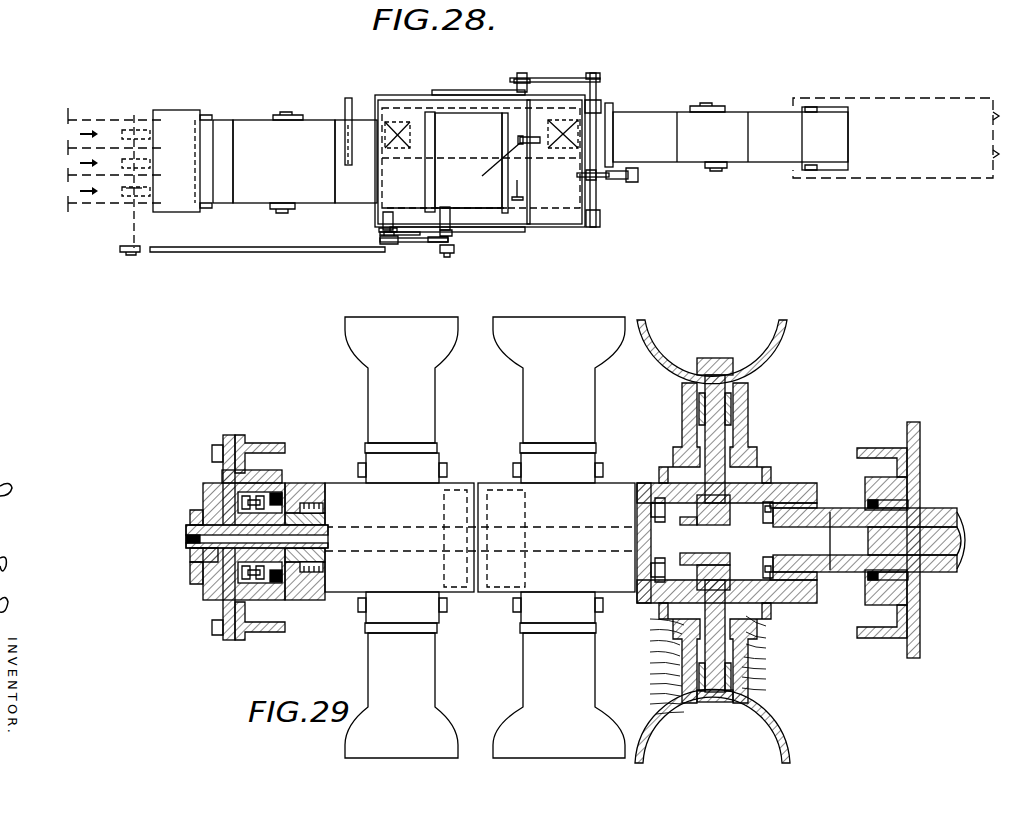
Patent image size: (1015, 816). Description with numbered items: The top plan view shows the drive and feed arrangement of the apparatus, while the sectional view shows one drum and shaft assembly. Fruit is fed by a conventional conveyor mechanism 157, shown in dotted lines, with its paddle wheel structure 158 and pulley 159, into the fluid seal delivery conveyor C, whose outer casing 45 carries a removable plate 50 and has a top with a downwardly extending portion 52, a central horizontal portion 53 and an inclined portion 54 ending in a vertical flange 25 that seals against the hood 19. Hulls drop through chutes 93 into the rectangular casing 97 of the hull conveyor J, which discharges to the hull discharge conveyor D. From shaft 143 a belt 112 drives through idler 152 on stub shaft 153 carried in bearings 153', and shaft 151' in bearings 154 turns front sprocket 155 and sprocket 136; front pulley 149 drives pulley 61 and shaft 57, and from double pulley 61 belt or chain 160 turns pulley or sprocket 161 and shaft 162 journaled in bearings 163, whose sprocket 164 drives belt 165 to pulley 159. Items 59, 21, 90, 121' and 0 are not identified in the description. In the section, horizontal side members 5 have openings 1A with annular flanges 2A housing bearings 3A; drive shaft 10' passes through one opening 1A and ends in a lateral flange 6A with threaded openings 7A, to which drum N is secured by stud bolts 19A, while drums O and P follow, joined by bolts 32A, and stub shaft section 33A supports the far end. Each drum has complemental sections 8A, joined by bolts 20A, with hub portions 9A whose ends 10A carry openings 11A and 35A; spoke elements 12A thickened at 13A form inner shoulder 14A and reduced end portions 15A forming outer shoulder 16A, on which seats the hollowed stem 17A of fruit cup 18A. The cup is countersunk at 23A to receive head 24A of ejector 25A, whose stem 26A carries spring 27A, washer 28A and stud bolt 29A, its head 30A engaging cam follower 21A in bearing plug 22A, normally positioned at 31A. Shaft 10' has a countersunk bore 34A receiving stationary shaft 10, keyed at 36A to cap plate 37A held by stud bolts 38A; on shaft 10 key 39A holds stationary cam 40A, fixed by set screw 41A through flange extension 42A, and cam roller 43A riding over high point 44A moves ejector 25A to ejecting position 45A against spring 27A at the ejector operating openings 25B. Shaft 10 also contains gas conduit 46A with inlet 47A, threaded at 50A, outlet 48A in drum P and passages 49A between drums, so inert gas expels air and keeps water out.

In FIG. 28, the conveyor mechanism 157 is at (128, 128).
In FIG. 28, the paddle wheel structure 158 is at (126, 190).
In FIG. 28, the pulley 159 is at (126, 256).
In FIG. 28, the removable plate 50 is at (180, 125).
In FIG. 28, the downwardly extending top portion 52 is at (222, 130).
In FIG. 28, the central horizontal portion 53 is at (284, 161).
In FIG. 28, the outer casing 45 is at (254, 112).
In FIG. 28, the bolt 59 is at (280, 112).
In FIG. 28, the conveyor structure C is at (258, 196).
In FIG. 28, the belt 165 is at (308, 255).
In FIG. 28, the rectangular casing 97 is at (366, 120).
In FIG. 28, the hull conveyor J is at (350, 96).
In FIG. 28, the hood 19 is at (482, 142).
In FIG. 28, the chutes 93 is at (400, 130).
In FIG. 28, the vertical flange 25 is at (425, 176).
In FIG. 28, the chamber 21 is at (436, 139).
In FIG. 28, the inclined portion 54 is at (422, 196).
In FIG. 28, the belt 112 is at (556, 78).
In FIG. 28, the shaft 143 is at (522, 73).
In FIG. 28, the idler 152 is at (594, 73).
In FIG. 28, the stub shaft 153 is at (606, 83).
In FIG. 28, the bearings 153' is at (640, 78).
In FIG. 28, the bearings 154 is at (600, 218).
In FIG. 28, the shaft 151' is at (623, 210).
In FIG. 28, the front sprocket 155 is at (610, 178).
In FIG. 28, the sprocket 136 is at (636, 176).
In FIG. 28, the shaft 57 is at (380, 219).
In FIG. 28, the belt or chain 160 is at (402, 222).
In FIG. 28, the bearings 163 is at (446, 207).
In FIG. 28, the pulley or sprocket 161 is at (505, 232).
In FIG. 28, the shaft 162 is at (452, 230).
In FIG. 28, the front pulley 149 is at (430, 244).
In FIG. 28, the double pulley 61 is at (386, 246).
In FIG. 28, the sprocket 164 is at (447, 257).
In FIG. 28, the bolt 90 is at (700, 105).
In FIG. 28, the hull discharge conveyor D is at (730, 122).
In FIG. 28, the extension 121' is at (896, 118).
In FIG. 29, the outlet 48A is at (406, 452).
In FIG. 29, the interconnecting passages 49A is at (531, 452).
In FIG. 29, the hollowed out stem 17A is at (418, 684).
In FIG. 29, the drum P is at (399, 537).
In FIG. 29, the drum O is at (556, 537).
In FIG. 29, the bolts 20A is at (500, 604).
In FIG. 29, the spoke elements 12A is at (512, 612).
In FIG. 29, the seal 0 is at (500, 575).
In FIG. 29, the horizontal side members 5 is at (222, 610).
In FIG. 29, the openings 1A is at (192, 502).
In FIG. 29, the stationary shaft 10 is at (159, 505).
In FIG. 29, the roller or ball bearings 3A is at (290, 488).
In FIG. 29, the annular flanges 2A is at (870, 604).
In FIG. 29, the lateral flange 6A is at (320, 600).
In FIG. 29, the gas conduit 46A is at (320, 528).
In FIG. 29, the countersunk threaded openings 7A is at (328, 547).
In FIG. 29, the threaded stud bolts 19A is at (326, 572).
In FIG. 29, the inlet opening 47A is at (188, 524).
In FIG. 29, the internal threads 50A is at (188, 540).
In FIG. 29, the key 36A is at (188, 554).
In FIG. 29, the cap plate 37A is at (190, 572).
In FIG. 29, the stud bolts 38A is at (198, 594).
In FIG. 29, the stub shaft section 33A is at (204, 602).
In FIG. 29, the hub end 10A is at (638, 482).
In FIG. 29, the complemental sections 8A is at (680, 470).
In FIG. 29, the cam follower 21A is at (682, 434).
In FIG. 29, the fruit ejector 25A is at (730, 364).
In FIG. 29, the ejecting position 45A is at (698, 360).
In FIG. 29, the ejector operating openings 25B is at (682, 394).
In FIG. 29, the countersink 23A is at (750, 394).
In FIG. 29, the normal position 31A is at (698, 414).
In FIG. 29, the coil or compression spring 27A is at (735, 410).
In FIG. 29, the head 30A is at (748, 421).
In FIG. 29, the washer 28A is at (822, 518).
In FIG. 29, the drum N is at (762, 483).
In FIG. 29, the high point 44A is at (671, 507).
In FIG. 29, the openings 35A is at (640, 528).
In FIG. 29, the bolts 32A is at (676, 548).
In FIG. 29, the flange extension 42A is at (705, 520).
In FIG. 29, the key 39A is at (705, 554).
In FIG. 29, the stationary cam 40A is at (746, 541).
In FIG. 29, the openings 11A is at (778, 549).
In FIG. 29, the set screw 41A is at (668, 570).
In FIG. 29, the cam roller 43A is at (724, 577).
In FIG. 29, the countersunk bore 34A is at (815, 572).
In FIG. 29, the hub portion 9A is at (775, 592).
In FIG. 29, the thickened portion 13A is at (638, 641).
In FIG. 29, the outer shoulder 16A is at (638, 652).
In FIG. 29, the stud bolt 29A is at (638, 675).
In FIG. 29, the cup stem engaging end portions 15A is at (708, 683).
In FIG. 29, the inner shoulder 14A is at (778, 639).
In FIG. 29, the bearing plug 22A is at (778, 650).
In FIG. 29, the stem 26A is at (778, 692).
In FIG. 29, the head 24A is at (718, 702).
In FIG. 29, the fruit cup 18A is at (655, 730).
In FIG. 29, the drive shaft 10' is at (905, 529).